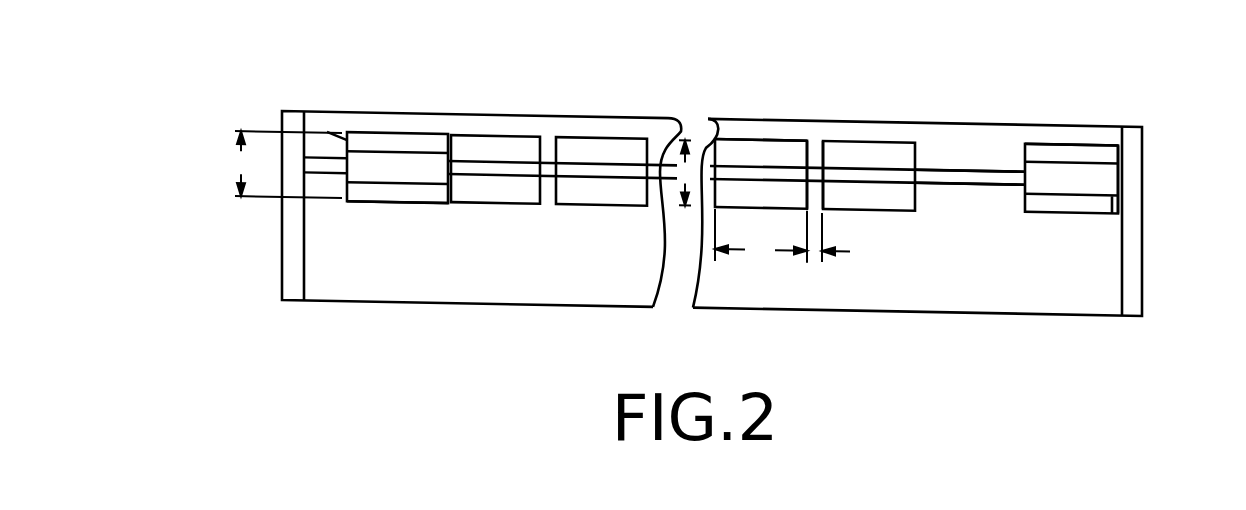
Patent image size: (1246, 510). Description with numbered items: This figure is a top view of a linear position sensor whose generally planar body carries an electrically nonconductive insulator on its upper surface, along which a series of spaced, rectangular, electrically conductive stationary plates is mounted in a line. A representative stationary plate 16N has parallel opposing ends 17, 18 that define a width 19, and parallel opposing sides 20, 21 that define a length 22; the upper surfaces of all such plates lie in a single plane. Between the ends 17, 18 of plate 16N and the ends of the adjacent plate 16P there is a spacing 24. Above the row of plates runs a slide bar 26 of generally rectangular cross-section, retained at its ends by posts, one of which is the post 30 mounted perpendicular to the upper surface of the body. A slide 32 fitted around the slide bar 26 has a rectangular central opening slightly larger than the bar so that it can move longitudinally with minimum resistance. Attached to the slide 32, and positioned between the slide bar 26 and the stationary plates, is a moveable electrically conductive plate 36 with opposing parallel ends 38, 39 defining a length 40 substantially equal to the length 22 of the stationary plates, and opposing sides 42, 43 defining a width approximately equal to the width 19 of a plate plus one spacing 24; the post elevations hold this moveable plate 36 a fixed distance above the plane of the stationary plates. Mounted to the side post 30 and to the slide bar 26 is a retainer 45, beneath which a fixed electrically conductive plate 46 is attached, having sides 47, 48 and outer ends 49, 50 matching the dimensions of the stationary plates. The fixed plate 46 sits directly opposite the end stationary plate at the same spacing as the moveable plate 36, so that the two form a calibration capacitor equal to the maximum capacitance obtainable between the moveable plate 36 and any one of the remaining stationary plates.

The post 30 is at (1142, 215).
The length 40 is at (283, 164).
The side 42 is at (327, 132).
The slide 32 is at (400, 148).
The end 38 is at (437, 132).
The side 43 is at (447, 143).
The moveable electrically conductive plate 36 is at (395, 202).
The end 39 is at (437, 202).
The side 21 is at (742, 208).
The length 22 is at (682, 172).
The end 17 is at (708, 147).
The electrically conductive plate 16N is at (782, 138).
The side 20 is at (752, 138).
The adjacent electrically conductive plate 16P is at (887, 140).
The end 18 is at (813, 147).
The slide bar 26 is at (960, 172).
The width 19 is at (761, 237).
The spacing 24 is at (822, 253).
The side 47 is at (1064, 140).
The outer end 49 is at (1052, 145).
The fixed electrically conductive plate 46 is at (1074, 147).
The retainer 45 is at (1098, 160).
The side 48 is at (1118, 155).
The outer end 50 is at (1082, 215).